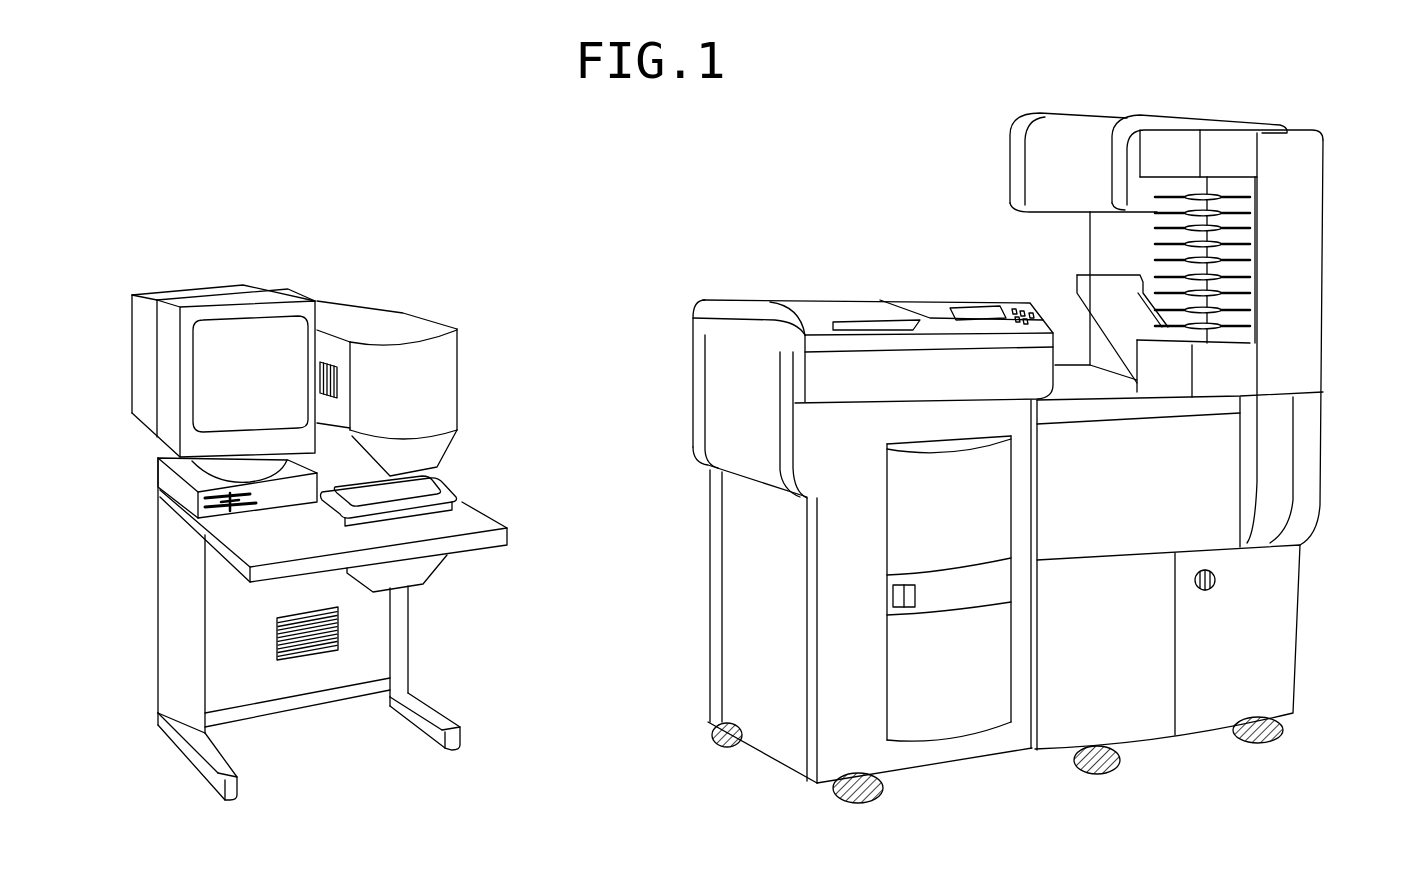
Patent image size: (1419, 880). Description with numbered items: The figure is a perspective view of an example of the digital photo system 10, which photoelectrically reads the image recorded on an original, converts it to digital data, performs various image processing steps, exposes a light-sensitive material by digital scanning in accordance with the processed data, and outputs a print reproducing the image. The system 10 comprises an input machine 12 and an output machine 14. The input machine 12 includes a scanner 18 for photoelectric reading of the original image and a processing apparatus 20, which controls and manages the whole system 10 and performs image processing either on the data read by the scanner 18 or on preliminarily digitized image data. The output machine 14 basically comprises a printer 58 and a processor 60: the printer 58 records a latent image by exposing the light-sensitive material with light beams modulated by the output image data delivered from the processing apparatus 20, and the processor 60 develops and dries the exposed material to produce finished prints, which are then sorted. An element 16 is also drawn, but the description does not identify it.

The digital photo system 10 is at (447, 200).
The input machine 12 is at (468, 288).
The output machine 14 is at (813, 177).
The image processing computer 16 is at (263, 220).
The scanner 18 is at (425, 390).
The processing apparatus 20 is at (195, 300).
The printer 58 is at (743, 418).
The processor 60 is at (1295, 455).